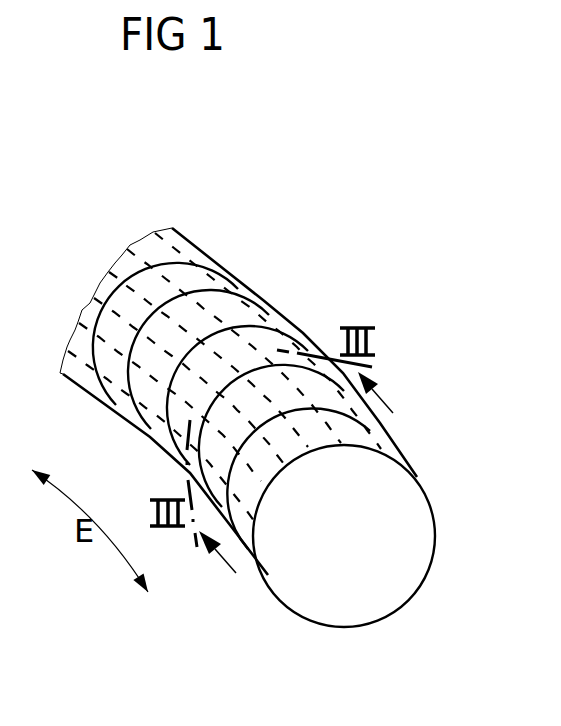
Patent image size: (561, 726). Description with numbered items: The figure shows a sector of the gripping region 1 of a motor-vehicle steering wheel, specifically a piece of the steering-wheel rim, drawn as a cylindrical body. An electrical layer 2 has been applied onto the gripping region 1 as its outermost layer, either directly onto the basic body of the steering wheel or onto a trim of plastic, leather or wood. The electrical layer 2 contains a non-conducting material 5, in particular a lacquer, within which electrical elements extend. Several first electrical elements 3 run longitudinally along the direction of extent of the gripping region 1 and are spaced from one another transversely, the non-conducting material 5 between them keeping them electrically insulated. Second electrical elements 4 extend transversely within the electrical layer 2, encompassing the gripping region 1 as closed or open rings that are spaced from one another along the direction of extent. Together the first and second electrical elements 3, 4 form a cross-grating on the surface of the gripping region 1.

The gripping region 1 is at (422, 552).
The electrical layer 2 is at (380, 435).
The first electrical elements 3 is at (250, 327).
The second electrical elements 4 is at (248, 323).
The non-conducting material 5 is at (278, 318).